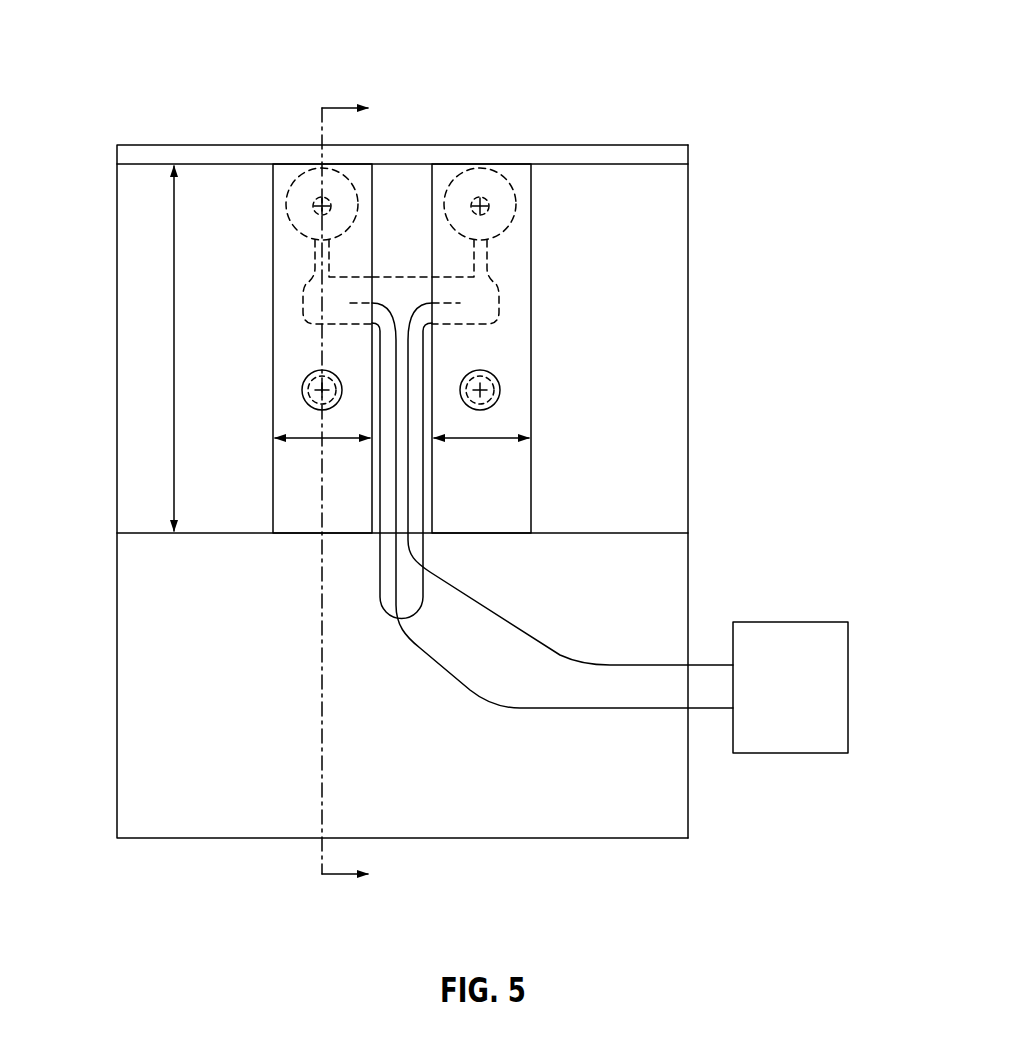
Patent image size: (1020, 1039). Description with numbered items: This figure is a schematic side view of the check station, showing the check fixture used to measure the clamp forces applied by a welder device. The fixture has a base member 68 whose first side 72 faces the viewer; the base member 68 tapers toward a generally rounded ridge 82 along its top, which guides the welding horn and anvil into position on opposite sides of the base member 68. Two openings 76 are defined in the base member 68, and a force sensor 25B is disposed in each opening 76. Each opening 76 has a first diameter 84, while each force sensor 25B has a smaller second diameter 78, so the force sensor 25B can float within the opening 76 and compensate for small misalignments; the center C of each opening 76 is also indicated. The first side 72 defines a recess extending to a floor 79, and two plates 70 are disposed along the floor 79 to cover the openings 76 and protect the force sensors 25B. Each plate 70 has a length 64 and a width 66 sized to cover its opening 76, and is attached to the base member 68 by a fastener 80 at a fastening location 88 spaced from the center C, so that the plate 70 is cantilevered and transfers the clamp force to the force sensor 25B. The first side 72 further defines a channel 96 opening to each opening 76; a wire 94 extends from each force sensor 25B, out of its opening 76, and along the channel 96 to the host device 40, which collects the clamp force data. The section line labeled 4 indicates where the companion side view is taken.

The base member 68 is at (657, 153).
The ridge 82 is at (580, 145).
The floor 79 is at (676, 216).
The first side 72 is at (663, 575).
The plate 70 is at (312, 521).
The length 64 is at (173, 372).
The width 66 is at (288, 441).
The section line 4- 4 is at (357, 493).
The opening 76 is at (294, 208).
The force sensor 25B is at (305, 177).
The center C is at (318, 206).
The first diameter 84 is at (287, 228).
The second diameter 78 is at (353, 268).
The channel 96 is at (447, 229).
The wire 94 is at (593, 663).
The host device 40 is at (807, 703).
The fastening location 88 is at (304, 384).
The fastener 80 is at (304, 396).